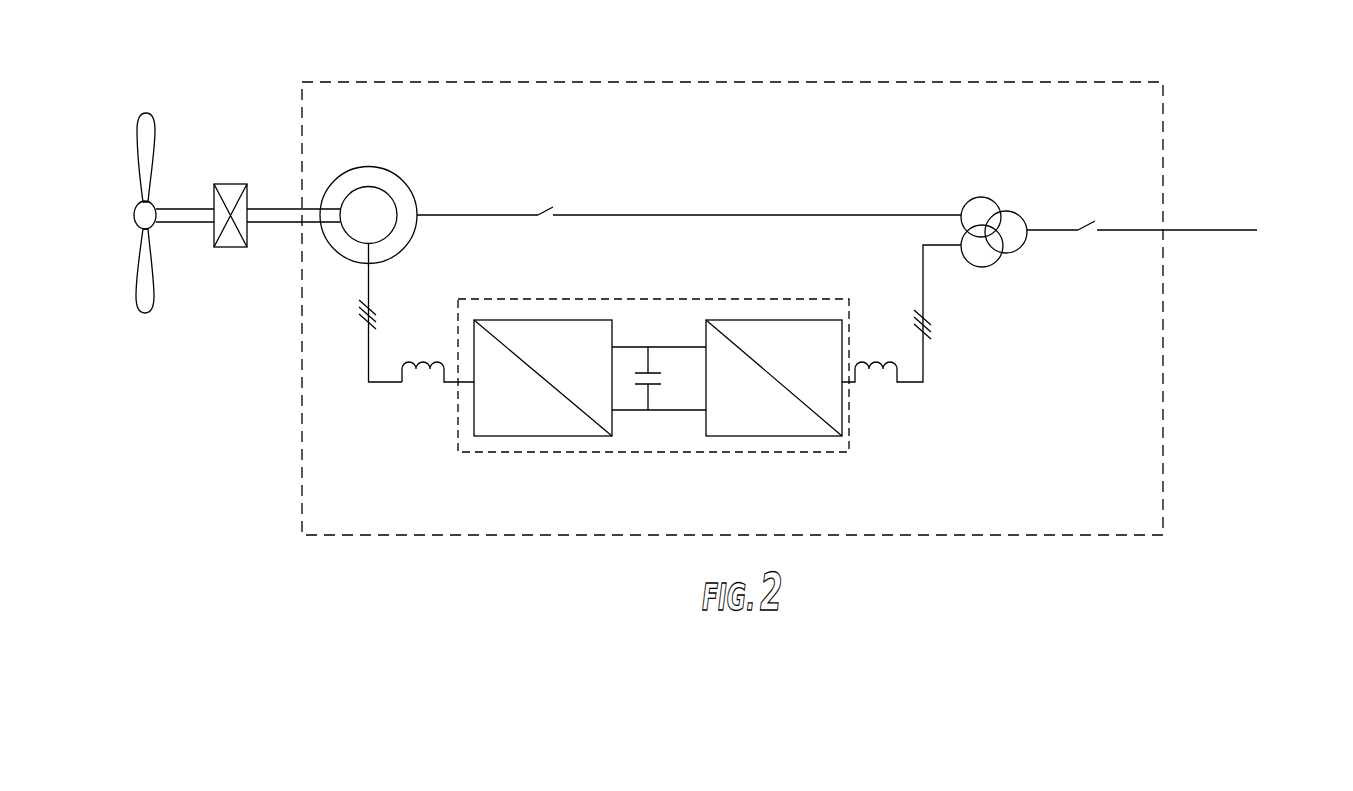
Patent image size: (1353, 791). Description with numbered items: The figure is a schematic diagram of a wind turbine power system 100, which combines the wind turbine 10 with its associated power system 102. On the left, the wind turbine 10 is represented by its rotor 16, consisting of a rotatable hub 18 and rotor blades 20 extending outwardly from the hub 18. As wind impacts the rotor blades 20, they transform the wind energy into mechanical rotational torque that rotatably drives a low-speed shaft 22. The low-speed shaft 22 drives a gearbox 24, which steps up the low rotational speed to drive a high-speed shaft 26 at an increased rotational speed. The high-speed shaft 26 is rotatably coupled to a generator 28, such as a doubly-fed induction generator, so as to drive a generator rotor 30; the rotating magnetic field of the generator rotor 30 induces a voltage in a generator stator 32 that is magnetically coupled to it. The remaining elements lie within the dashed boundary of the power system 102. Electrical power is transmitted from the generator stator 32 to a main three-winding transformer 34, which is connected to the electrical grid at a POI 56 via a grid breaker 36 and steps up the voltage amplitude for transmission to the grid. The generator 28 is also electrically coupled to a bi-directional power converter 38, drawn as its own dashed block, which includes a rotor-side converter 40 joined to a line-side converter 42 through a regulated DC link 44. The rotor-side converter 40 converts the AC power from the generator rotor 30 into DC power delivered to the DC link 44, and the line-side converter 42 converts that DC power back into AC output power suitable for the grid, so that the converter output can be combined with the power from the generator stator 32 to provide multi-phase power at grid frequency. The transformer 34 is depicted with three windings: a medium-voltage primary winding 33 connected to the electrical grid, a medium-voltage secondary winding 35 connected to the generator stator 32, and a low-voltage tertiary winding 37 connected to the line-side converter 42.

The wind turbine power system 100 is at (1232, 73).
The wind turbine 10 is at (158, 70).
The rotor 16 is at (118, 223).
The rotatable hub 18 is at (133, 215).
The rotor blade 20 is at (143, 152).
The low-speed shaft 22 is at (170, 223).
The gearbox 24 is at (230, 184).
The high-speed shaft 26 is at (258, 222).
The power system 102 is at (734, 72).
The generator 28 is at (368, 157).
The generator rotor 30 is at (390, 195).
The generator stator 32 is at (350, 263).
The bi-directional power converter 38 is at (675, 298).
The rotor-side converter 40 is at (528, 436).
The line-side converter 42 is at (785, 436).
The regulated DC link 44 is at (667, 387).
The main three-winding transformer 34 is at (1005, 165).
The secondary winding 35 is at (961, 203).
The primary winding 33 is at (1027, 242).
The tertiary winding 37 is at (982, 267).
The grid breaker 36 is at (1103, 220).
The POI 56 is at (1237, 245).